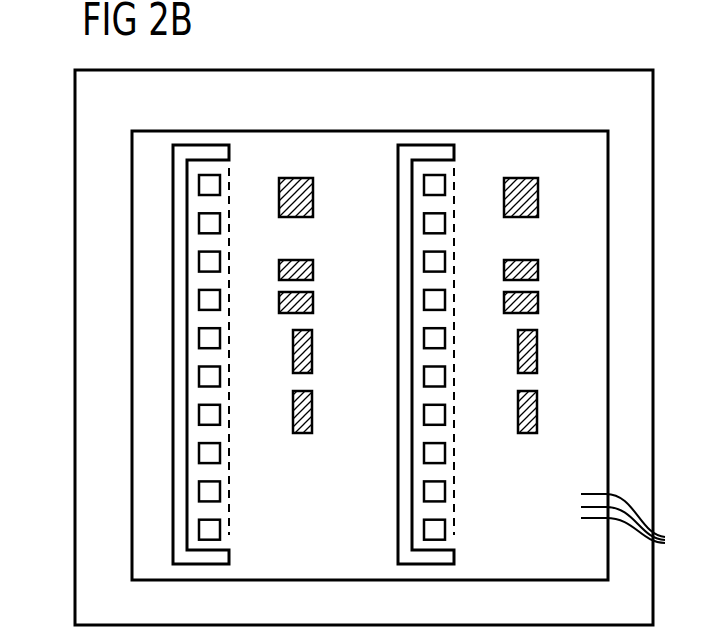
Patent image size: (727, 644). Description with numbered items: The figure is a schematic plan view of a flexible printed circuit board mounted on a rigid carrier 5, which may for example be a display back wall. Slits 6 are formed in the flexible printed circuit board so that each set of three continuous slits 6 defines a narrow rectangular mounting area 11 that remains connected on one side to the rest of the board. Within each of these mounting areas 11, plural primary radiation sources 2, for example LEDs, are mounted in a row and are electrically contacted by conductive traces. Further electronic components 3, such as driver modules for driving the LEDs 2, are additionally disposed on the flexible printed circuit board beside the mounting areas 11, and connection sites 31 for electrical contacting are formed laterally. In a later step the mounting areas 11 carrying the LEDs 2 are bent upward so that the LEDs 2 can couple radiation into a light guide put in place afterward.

The rigid carrier 5 is at (338, 77).
The slits 6 is at (200, 152).
The narrow rectangular mounting area 11 is at (223, 170).
The primary radiation sources 2 is at (200, 450).
The electronic components 3 is at (306, 200).
The connection sites 31 is at (638, 526).